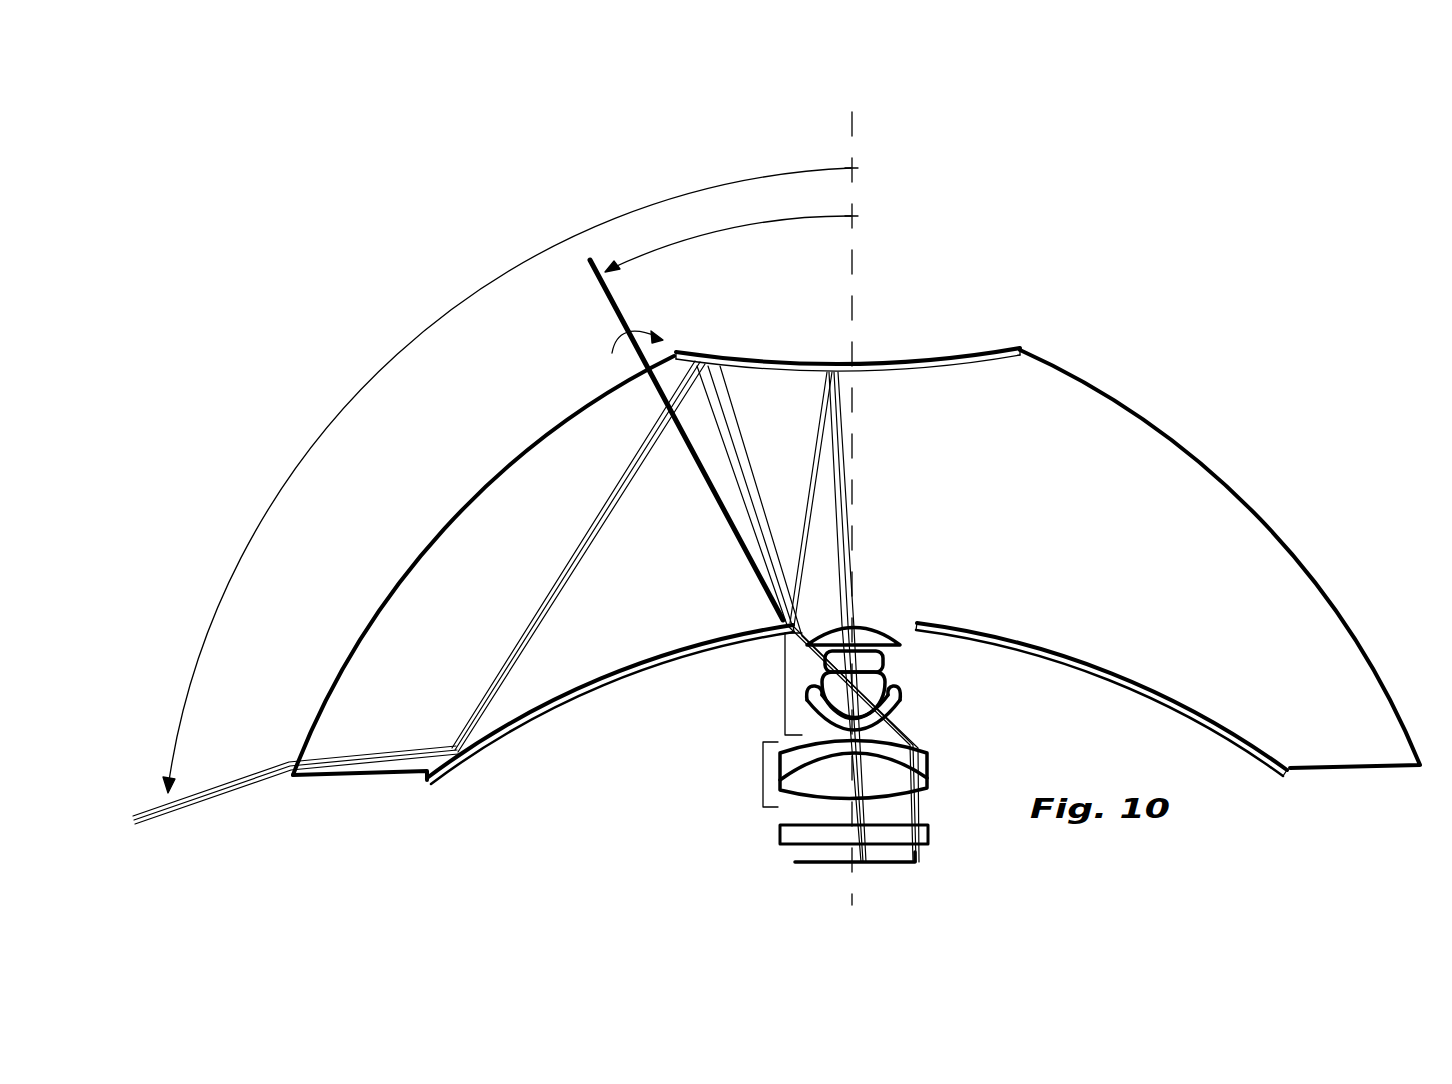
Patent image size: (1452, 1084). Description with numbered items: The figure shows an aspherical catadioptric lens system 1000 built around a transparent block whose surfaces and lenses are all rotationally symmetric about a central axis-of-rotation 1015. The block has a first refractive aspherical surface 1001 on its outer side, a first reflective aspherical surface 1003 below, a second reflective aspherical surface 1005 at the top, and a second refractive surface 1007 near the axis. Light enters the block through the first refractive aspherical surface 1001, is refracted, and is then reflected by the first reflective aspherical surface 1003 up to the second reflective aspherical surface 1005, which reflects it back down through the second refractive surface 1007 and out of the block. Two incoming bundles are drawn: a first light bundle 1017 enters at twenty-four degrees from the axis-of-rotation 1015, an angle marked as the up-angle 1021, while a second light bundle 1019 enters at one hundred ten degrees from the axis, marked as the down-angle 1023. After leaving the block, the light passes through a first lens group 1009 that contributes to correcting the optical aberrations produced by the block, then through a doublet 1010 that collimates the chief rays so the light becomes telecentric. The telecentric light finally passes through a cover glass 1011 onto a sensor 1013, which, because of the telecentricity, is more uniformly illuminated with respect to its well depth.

The aspherical catadioptric lens system 1000 is at (601, 798).
The first refractive aspherical surface 1001 is at (1266, 541).
The first reflective aspherical surface 1003 is at (1108, 676).
The second reflective aspherical surface 1005 is at (975, 362).
The second refractive surface 1007 is at (876, 618).
The first lens group 1009 is at (785, 700).
The doublet 1010 is at (763, 776).
The cover glass 1011 is at (780, 833).
The sensor 1013 is at (795, 863).
The axis-of-rotation 1015 is at (859, 312).
The first light bundle 1017 is at (662, 338).
The second light bundle 1019 is at (245, 795).
The up-angle 1021 is at (815, 217).
The down-angle 1023 is at (737, 172).